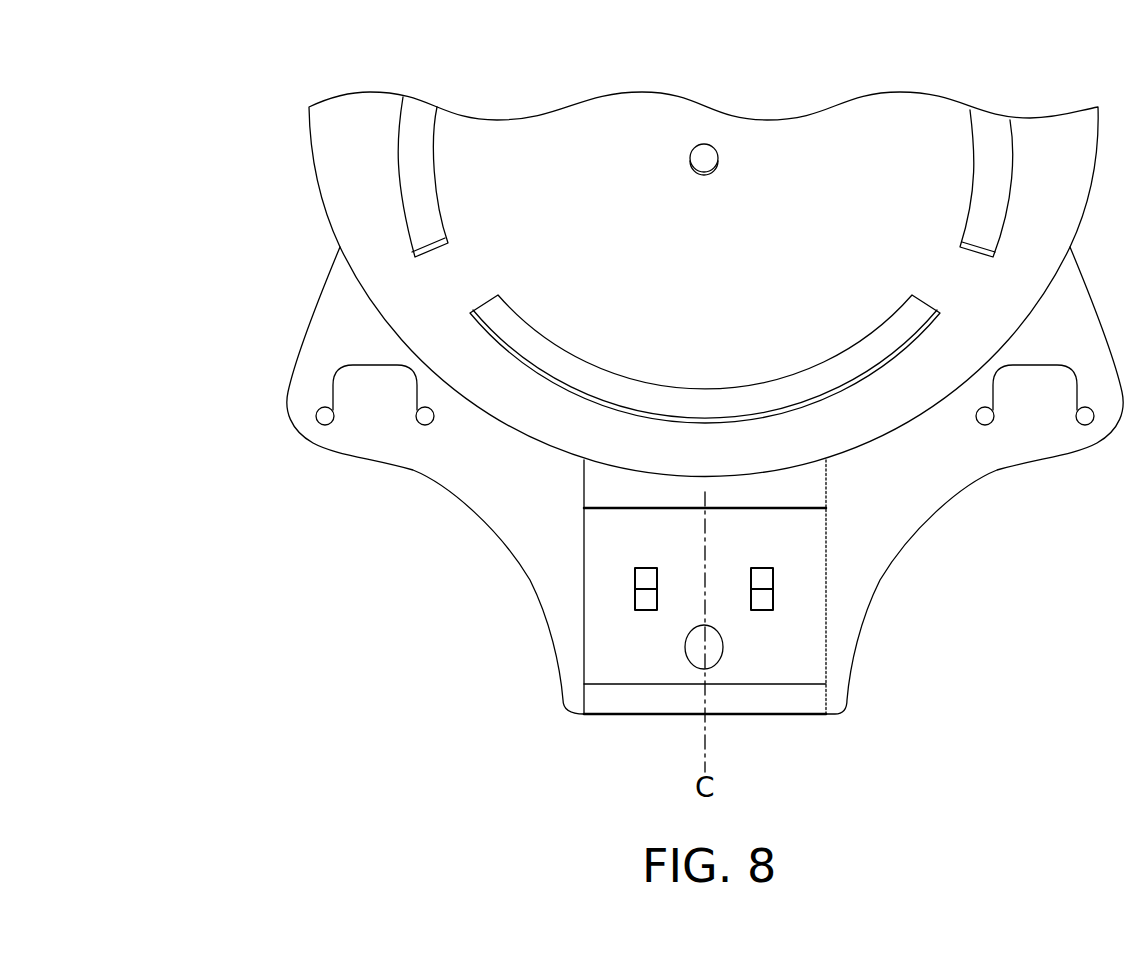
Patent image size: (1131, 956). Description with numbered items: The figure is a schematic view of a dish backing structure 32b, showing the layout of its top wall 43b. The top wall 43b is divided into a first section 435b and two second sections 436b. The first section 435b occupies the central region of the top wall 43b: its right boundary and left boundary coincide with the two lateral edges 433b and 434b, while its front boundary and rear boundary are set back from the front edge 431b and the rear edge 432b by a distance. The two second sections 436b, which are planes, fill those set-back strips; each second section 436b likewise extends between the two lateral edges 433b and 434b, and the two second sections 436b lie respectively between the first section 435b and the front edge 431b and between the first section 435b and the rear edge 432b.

The dish backing structure 32b is at (654, 374).
The rear edge 432b is at (707, 477).
The top wall 43b is at (722, 624).
The front edge 431b is at (640, 715).
The lateral edge 433b is at (826, 587).
The lateral edge 434b is at (584, 588).
The first section 435b is at (750, 545).
The second section 436b is at (763, 492).